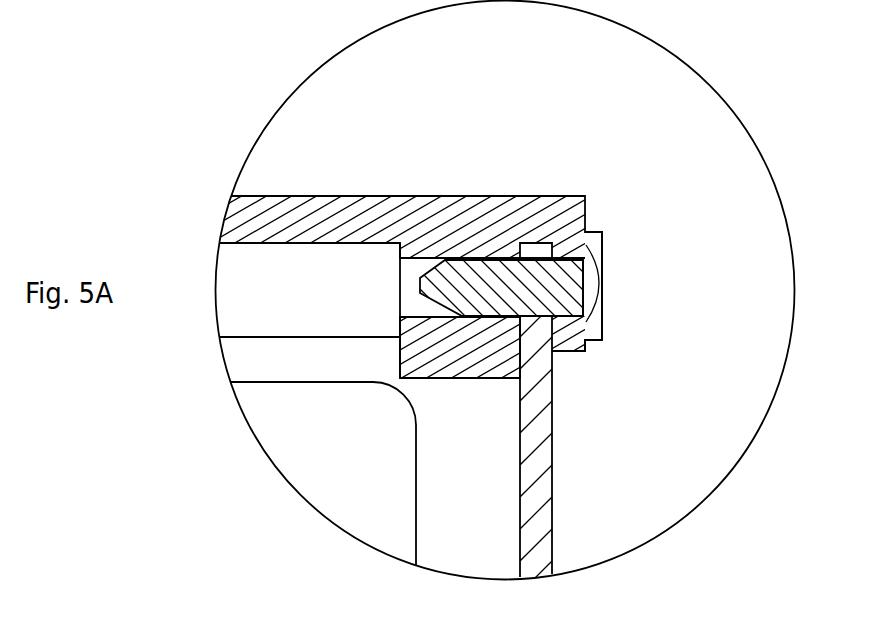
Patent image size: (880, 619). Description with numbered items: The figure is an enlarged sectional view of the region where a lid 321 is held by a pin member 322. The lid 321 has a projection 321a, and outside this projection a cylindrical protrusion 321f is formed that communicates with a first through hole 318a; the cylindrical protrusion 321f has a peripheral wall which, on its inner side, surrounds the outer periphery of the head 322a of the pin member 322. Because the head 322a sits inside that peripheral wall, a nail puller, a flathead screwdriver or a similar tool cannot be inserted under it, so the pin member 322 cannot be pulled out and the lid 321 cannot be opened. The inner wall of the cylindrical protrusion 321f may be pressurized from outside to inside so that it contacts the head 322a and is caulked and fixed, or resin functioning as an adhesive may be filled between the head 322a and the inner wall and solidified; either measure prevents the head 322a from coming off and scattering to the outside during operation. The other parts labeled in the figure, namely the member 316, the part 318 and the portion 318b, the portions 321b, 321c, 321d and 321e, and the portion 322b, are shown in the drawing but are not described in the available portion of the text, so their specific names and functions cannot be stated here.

The housing body 316 is at (335, 466).
The sleeve member 318 is at (552, 462).
The first through hole 318a is at (538, 306).
The protrusion of sleeve member 318b is at (538, 244).
The lid 321 is at (587, 194).
The projection 321a is at (567, 351).
The inner wall portion of cover member 321b is at (470, 366).
The outer flange of cover member 321c is at (603, 270).
The groove side face of cover member 321d is at (408, 276).
The recess of cover member 321e is at (328, 280).
The cylindrical protrusion 321f is at (602, 343).
The pin member 322 is at (494, 275).
The head 322a is at (598, 290).
The upper face of seal ring 322b is at (498, 278).